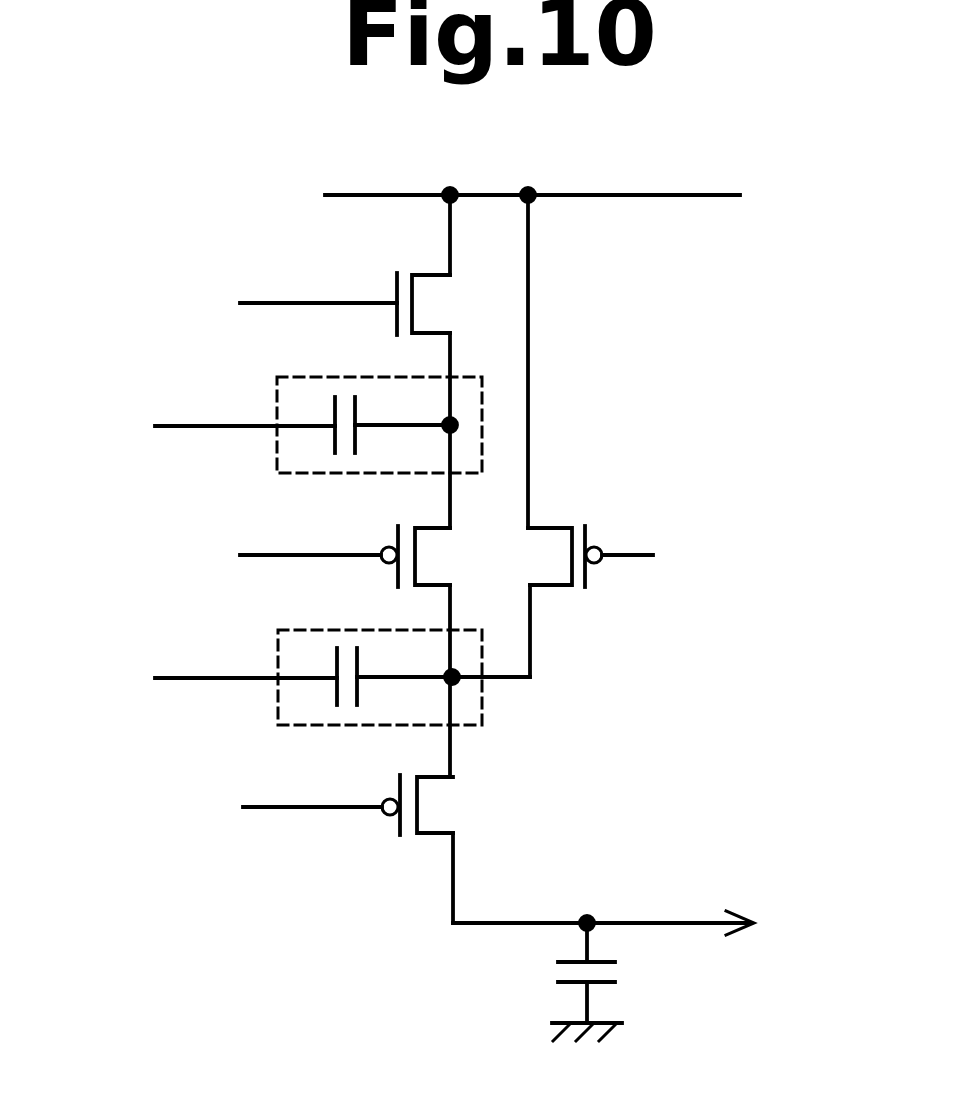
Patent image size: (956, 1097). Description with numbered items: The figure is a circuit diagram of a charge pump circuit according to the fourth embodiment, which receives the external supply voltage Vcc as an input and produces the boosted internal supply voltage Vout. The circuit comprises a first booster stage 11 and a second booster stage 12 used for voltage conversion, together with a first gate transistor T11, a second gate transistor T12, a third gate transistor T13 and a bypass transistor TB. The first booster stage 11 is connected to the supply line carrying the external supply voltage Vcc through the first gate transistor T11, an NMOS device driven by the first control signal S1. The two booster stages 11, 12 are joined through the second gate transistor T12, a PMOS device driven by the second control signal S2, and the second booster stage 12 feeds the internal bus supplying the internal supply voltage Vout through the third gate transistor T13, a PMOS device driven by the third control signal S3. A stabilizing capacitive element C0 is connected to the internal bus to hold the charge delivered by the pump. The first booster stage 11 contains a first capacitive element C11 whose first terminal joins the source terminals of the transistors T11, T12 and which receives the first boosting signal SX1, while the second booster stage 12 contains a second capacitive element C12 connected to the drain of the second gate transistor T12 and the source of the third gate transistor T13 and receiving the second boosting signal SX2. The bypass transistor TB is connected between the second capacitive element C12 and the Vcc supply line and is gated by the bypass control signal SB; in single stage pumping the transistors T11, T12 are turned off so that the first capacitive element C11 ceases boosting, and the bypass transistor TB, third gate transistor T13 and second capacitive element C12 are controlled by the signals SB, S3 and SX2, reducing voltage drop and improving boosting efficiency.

The first gate transistor T11 is at (430, 273).
The second gate transistor T12 is at (432, 528).
The third gate transistor T13 is at (433, 777).
The bypass transistor TB is at (553, 528).
The first capacitive element C11 is at (332, 408).
The second capacitive element C12 is at (334, 660).
The stabilizing capacitive element C0 is at (576, 983).
The first booster stage 11 is at (276, 385).
The second booster stage 12 is at (278, 637).
The first control signal S1 is at (283, 306).
The second control signal S2 is at (275, 558).
The third control signal S3 is at (278, 806).
The first boosting signal SX1 is at (249, 429).
The second boosting signal SX2 is at (250, 681).
The bypass control signal SB is at (666, 558).
The external supply voltage Vcc is at (567, 197).
The internal supply voltage Vout is at (648, 923).